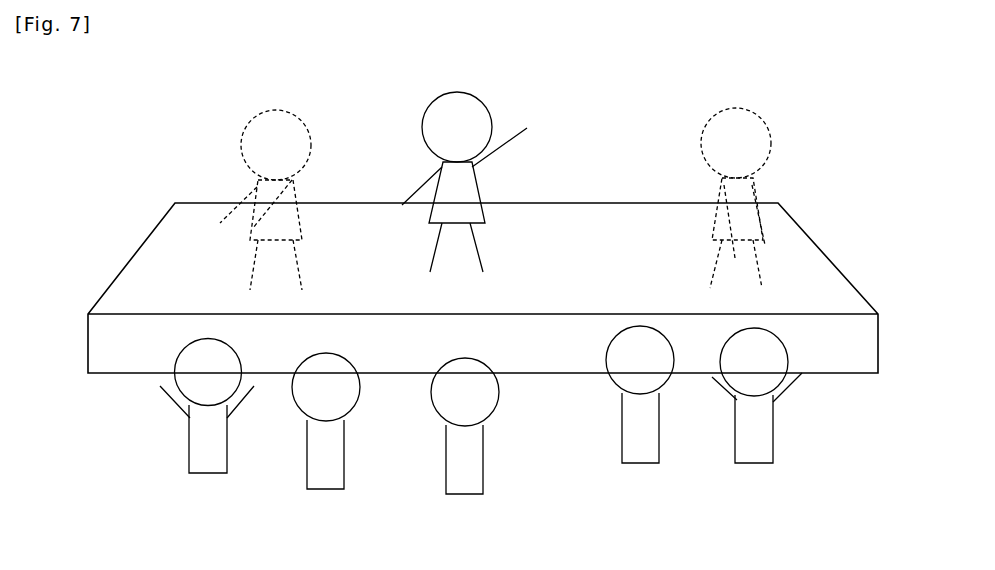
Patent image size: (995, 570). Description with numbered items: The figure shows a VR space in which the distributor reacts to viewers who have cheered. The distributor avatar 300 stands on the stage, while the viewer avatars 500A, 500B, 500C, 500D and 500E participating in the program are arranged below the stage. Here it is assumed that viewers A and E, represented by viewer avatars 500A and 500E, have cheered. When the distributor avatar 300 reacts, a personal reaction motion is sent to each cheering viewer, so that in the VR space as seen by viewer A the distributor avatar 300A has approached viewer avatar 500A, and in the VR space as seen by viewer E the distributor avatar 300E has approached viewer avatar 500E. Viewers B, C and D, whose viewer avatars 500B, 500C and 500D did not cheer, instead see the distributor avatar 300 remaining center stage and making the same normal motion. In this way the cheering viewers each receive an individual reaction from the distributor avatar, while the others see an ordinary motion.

The distributor avatar 300A is at (288, 112).
The distributor avatar 300 is at (482, 97).
The distributor avatar 300E is at (758, 115).
The viewer avatar 500A is at (206, 478).
The viewer avatar 500B is at (325, 492).
The viewer avatar 500C is at (464, 497).
The viewer avatar 500D is at (639, 466).
The viewer avatar 500E is at (752, 466).